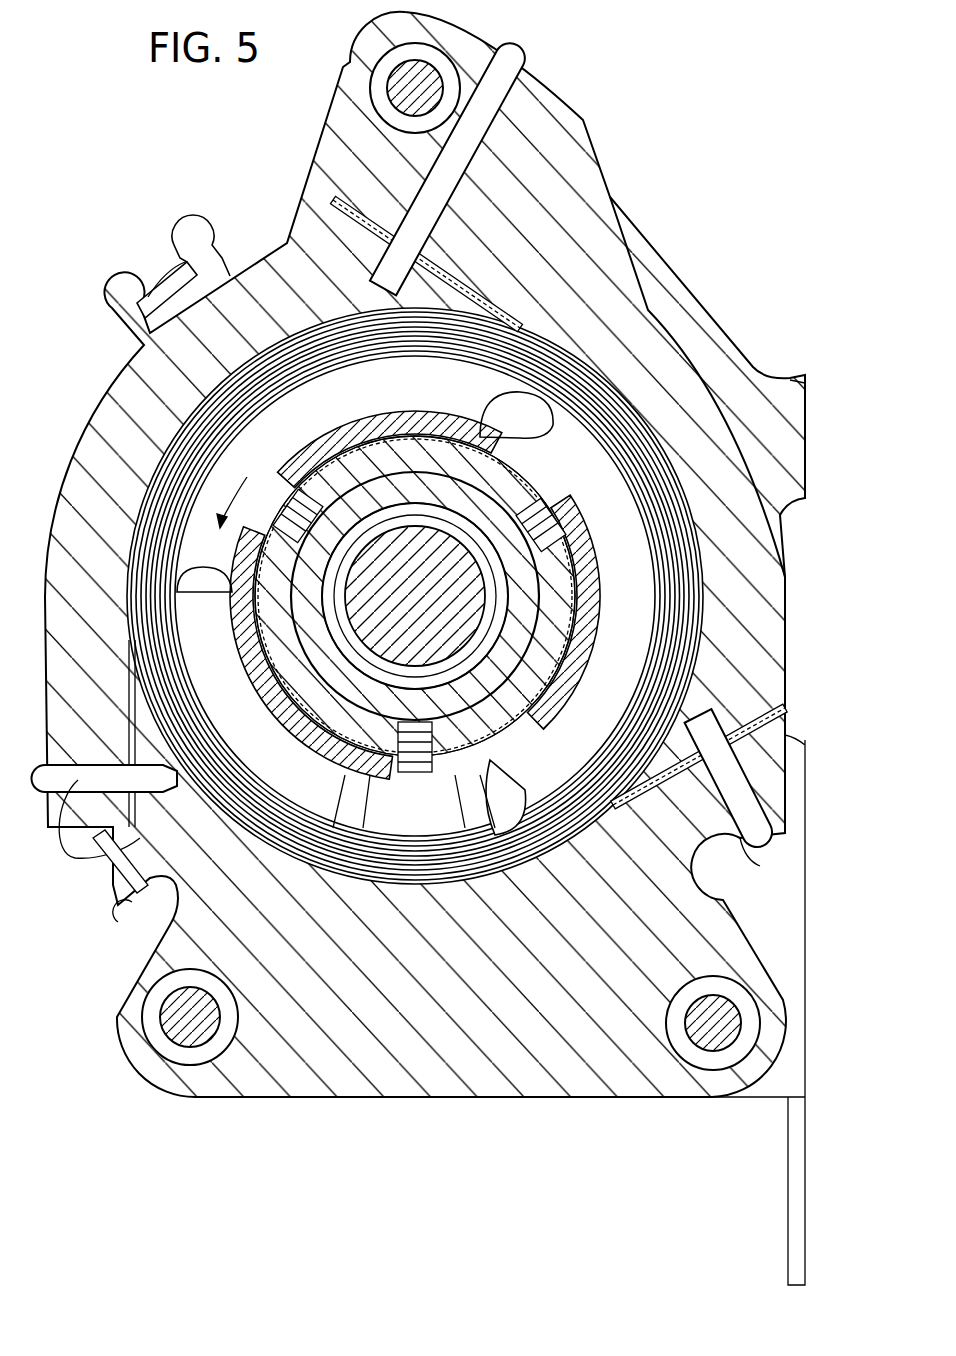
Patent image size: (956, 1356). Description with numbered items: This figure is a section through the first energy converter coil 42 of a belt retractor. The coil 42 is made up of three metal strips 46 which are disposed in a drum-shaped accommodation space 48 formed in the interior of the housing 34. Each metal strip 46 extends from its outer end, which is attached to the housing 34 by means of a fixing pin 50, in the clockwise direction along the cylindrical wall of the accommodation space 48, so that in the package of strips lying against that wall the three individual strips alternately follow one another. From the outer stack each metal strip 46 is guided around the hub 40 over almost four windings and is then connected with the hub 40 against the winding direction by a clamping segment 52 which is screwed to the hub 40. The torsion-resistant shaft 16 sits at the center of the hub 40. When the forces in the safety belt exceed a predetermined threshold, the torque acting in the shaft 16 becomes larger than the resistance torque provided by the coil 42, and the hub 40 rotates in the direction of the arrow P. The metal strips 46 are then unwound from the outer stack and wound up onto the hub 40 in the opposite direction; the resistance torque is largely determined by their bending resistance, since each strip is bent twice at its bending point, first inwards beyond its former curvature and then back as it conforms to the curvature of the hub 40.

The shaft 16 is at (478, 605).
The housing 34 is at (595, 222).
The hub 40 is at (521, 490).
The first energy converter coil 42 is at (328, 395).
The metal strip 46 is at (358, 228).
The accommodation space 48 is at (284, 760).
The fixing pin 50 is at (502, 88).
The clamping segment 52 is at (396, 414).
The arrow P is at (246, 478).